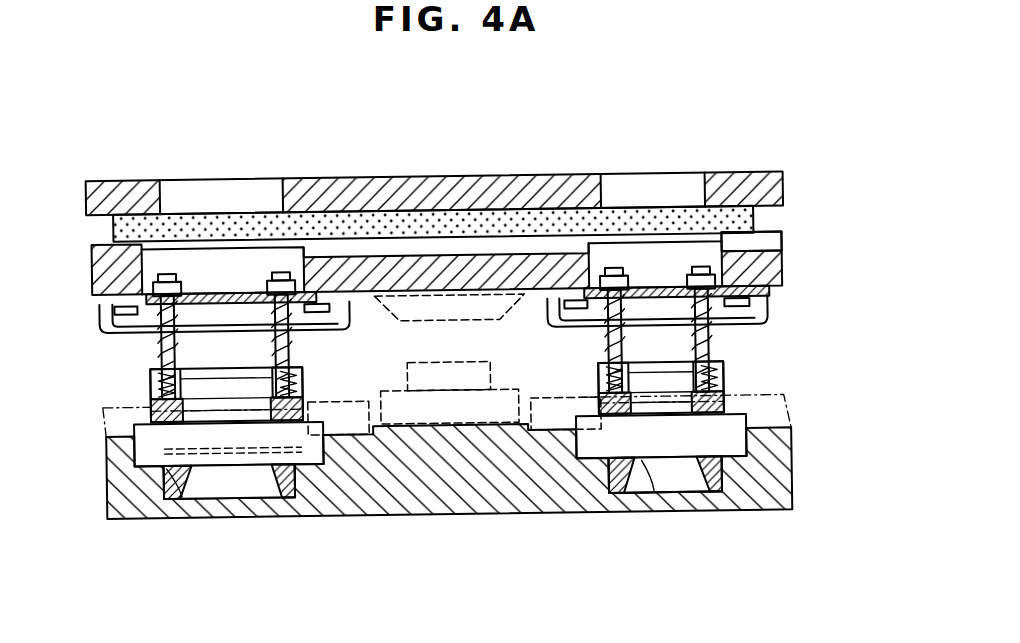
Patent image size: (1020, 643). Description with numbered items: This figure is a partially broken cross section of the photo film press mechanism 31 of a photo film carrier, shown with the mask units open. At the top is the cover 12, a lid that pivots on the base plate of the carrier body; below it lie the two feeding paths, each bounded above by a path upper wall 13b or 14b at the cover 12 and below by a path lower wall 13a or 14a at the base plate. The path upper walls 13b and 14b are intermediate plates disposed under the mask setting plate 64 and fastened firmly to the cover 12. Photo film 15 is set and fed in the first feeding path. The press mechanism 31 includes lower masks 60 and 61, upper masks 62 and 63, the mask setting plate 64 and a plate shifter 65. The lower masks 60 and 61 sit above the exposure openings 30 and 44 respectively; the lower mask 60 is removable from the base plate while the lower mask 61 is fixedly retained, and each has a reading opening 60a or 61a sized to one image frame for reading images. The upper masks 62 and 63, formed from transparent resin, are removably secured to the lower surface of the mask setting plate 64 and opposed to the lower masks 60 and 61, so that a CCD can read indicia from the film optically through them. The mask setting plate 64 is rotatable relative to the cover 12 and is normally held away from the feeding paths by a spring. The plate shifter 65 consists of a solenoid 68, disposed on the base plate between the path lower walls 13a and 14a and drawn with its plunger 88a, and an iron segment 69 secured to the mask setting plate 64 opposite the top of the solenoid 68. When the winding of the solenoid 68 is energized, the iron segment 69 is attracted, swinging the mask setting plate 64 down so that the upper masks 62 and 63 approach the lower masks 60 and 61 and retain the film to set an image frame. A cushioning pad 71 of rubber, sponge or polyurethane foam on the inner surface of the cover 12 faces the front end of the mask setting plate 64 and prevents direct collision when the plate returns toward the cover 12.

The cover 12 is at (387, 181).
The path lower wall 13a is at (320, 470).
The path upper wall 13b is at (313, 400).
The path lower wall 14a is at (597, 450).
The path upper wall 14b is at (574, 398).
The photo film 15 is at (320, 440).
The exposure opening 30 is at (284, 520).
The photo film press mechanism 31 is at (800, 282).
The exposure opening 44 is at (613, 500).
The lower mask 60 is at (250, 507).
The reading opening 60a is at (200, 478).
The lower mask 61 is at (698, 500).
The reading opening 61a is at (640, 460).
The upper mask 62 is at (150, 357).
The upper mask 63 is at (745, 357).
The mask setting plate 64 is at (333, 250).
The plate shifter 65 is at (558, 142).
The solenoid 68 is at (512, 363).
The pattern region 88a is at (422, 378).
The iron segment 69 is at (465, 300).
The cushioning pad 71 is at (647, 220).